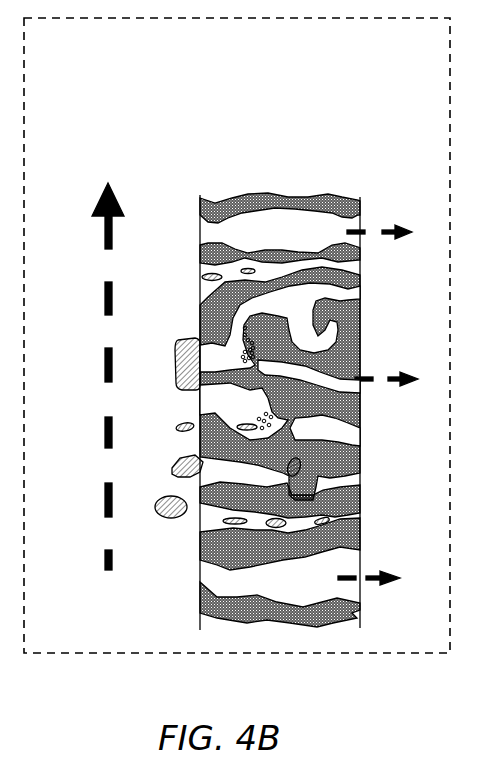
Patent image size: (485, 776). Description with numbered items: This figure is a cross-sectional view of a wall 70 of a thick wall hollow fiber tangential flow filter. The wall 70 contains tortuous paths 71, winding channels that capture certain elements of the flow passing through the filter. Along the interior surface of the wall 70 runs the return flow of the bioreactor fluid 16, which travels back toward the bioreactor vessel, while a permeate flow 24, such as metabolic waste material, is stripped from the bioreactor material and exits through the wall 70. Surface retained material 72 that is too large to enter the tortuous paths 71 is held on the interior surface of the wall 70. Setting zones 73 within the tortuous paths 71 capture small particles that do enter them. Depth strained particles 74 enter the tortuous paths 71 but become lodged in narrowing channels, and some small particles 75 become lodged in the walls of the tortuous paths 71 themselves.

The wall 70 is at (275, 345).
The tortuous paths 71 is at (352, 300).
The surface retained material 72 is at (182, 378).
The setting zones 73 is at (243, 343).
The depth strained particles 74 is at (300, 463).
The small particles 75 is at (227, 567).
The return flow of the bioreactor fluid 16 is at (103, 372).
The permeate flow 24 is at (383, 229).